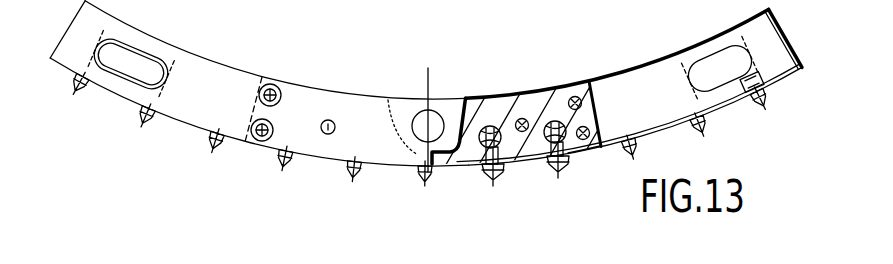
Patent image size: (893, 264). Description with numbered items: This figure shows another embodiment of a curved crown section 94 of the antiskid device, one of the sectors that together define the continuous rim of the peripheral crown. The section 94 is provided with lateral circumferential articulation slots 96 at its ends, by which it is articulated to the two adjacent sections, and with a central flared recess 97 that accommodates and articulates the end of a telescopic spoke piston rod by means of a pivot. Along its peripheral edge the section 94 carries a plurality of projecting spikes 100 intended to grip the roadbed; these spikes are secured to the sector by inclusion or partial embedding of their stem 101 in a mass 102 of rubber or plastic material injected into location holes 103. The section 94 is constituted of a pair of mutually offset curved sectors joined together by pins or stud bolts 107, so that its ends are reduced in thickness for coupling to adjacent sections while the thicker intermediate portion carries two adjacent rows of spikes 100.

The curved section 94 is at (217, 63).
The lateral circumferential articulation slot 96 is at (125, 74).
The central flared recess 97 is at (464, 96).
The spike 100 is at (569, 156).
The stem 101 is at (548, 158).
The mass 102 is at (560, 122).
The location hole 103 is at (496, 126).
The stud bolt 107 is at (330, 119).